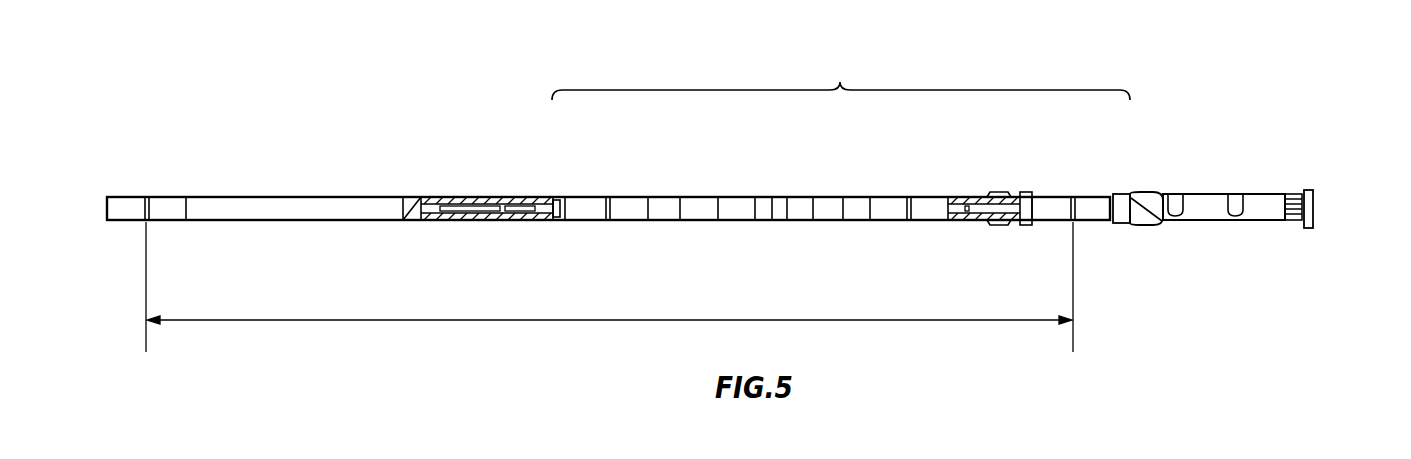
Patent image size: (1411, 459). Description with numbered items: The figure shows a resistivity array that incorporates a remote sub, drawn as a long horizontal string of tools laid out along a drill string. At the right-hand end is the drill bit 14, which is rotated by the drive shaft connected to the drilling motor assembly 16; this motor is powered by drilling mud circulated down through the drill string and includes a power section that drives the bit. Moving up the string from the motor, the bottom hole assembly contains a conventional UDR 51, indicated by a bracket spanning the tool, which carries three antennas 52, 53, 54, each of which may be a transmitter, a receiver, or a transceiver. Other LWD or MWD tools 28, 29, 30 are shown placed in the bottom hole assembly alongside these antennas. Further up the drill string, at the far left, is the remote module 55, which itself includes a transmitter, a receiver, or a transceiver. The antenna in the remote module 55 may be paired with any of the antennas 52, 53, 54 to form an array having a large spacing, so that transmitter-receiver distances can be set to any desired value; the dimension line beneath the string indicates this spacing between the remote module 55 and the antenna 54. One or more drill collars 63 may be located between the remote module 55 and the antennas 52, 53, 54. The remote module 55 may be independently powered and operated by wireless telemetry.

The drill bit 14 is at (1314, 204).
The drilling motor assembly 16 is at (1193, 193).
The LWD or MWD tool 28 is at (443, 196).
The LWD or MWD tool 29 is at (723, 196).
The LWD or MWD tool 30 is at (990, 222).
The UDR 51 is at (840, 81).
The antenna 52 is at (608, 196).
The antenna 53 is at (909, 196).
The antenna 54 is at (1073, 196).
The remote module 55 is at (147, 196).
The drill collar 63 is at (250, 221).